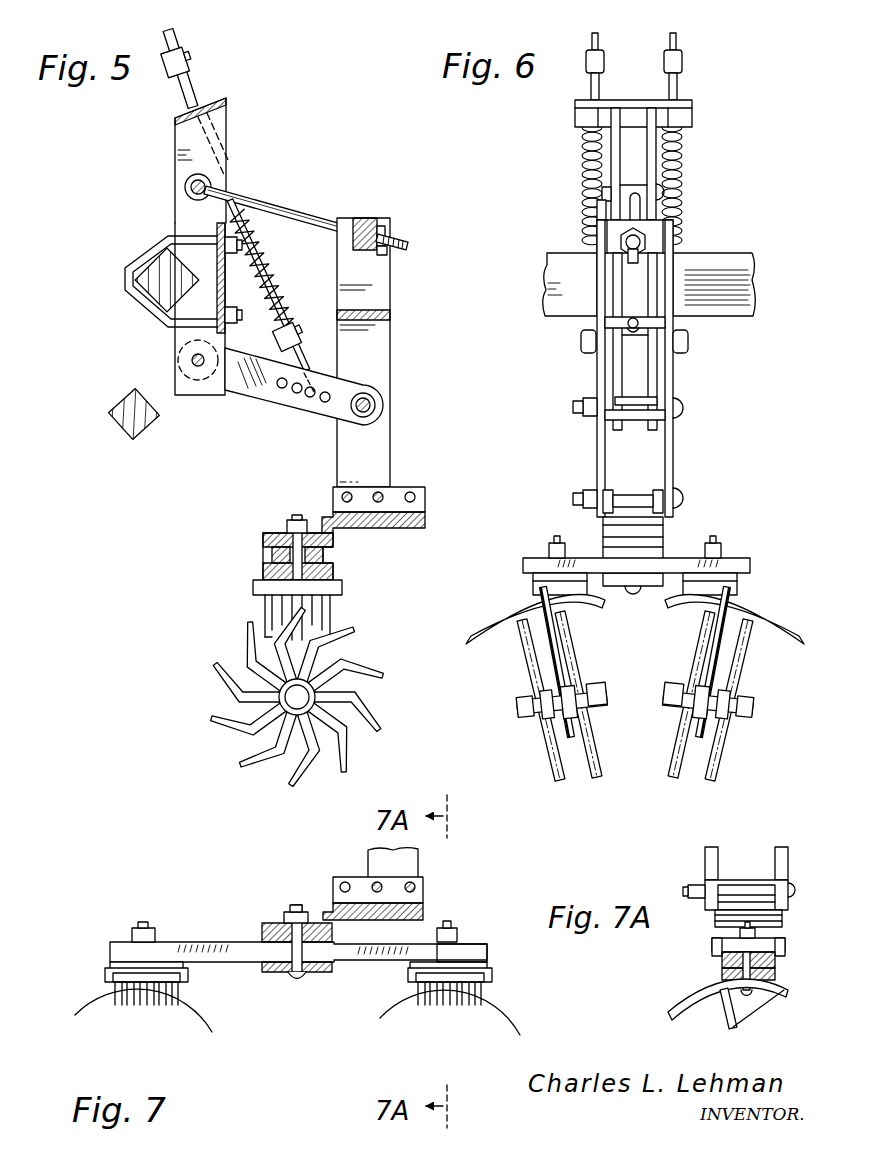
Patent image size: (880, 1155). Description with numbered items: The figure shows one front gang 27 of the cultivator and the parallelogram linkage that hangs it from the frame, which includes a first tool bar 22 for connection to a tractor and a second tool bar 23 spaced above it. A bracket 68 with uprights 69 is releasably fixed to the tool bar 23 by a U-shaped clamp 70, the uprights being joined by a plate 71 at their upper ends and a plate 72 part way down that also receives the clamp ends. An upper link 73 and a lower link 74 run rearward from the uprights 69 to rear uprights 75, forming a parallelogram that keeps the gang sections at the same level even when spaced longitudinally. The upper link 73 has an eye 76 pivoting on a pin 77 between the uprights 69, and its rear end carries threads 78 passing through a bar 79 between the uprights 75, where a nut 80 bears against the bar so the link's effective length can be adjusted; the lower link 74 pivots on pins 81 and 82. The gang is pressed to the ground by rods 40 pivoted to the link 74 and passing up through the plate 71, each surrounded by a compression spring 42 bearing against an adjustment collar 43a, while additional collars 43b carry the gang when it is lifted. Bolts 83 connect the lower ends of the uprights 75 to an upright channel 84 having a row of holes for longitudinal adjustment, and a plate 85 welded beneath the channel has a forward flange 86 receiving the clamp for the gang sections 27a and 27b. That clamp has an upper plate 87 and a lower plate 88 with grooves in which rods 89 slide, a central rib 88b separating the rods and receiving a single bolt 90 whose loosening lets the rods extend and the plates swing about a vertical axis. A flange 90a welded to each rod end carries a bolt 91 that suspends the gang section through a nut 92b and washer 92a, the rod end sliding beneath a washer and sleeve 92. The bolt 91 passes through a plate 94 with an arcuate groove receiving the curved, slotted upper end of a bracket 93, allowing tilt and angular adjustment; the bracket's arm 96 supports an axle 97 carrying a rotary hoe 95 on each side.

In FIG. 5, the first tool bar 22 is at (112, 410).
In FIG. 5, the second tool bar 23 is at (140, 268).
In FIG. 5, the front gang 27 is at (207, 684).
In FIG. 6, the front gang 27 is at (542, 745).
In FIG. 6, the gang section 27a is at (552, 770).
In FIG. 7, the gang section 27a is at (210, 1030).
In FIG. 6, the gang section 27b is at (718, 762).
In FIG. 7, the gang section 27b is at (512, 1022).
In FIG. 5, the rod 40 is at (258, 246).
In FIG. 5, the compression spring 42 is at (270, 272).
In FIG. 6, the adjustment collar 43a is at (581, 340).
In FIG. 5, the additional collar 43b is at (193, 65).
In FIG. 6, the additional collar 43b is at (682, 62).
In FIG. 5, the bracket 68 is at (230, 140).
In FIG. 5, the upright 69 is at (176, 335).
In FIG. 6, the upright 69 is at (647, 145).
In FIG. 5, the U-shaped clamp 70 is at (128, 298).
In FIG. 5, the plate 71 is at (222, 100).
In FIG. 6, the plate 71 is at (692, 115).
In FIG. 5, the plate 72 is at (228, 291).
In FIG. 5, the upper link 73 is at (270, 205).
In FIG. 6, the upper link 73 is at (607, 213).
In FIG. 5, the lower link 74 is at (257, 402).
In FIG. 6, the lower link 74 is at (660, 383).
In FIG. 5, the rear upright 75 is at (392, 436).
In FIG. 6, the rear upright 75 is at (675, 447).
In FIG. 7, the rear upright 75 is at (368, 860).
In FIG. 7A, the rear upright 75 is at (788, 860).
In FIG. 5, the eye 76 is at (190, 180).
In FIG. 5, the pin 77 is at (188, 190).
In FIG. 5, the threads 78 is at (405, 243).
In FIG. 6, the threads 78 is at (634, 255).
In FIG. 5, the bar 79 is at (365, 218).
In FIG. 6, the bar 79 is at (670, 220).
In FIG. 5, the nut 80 is at (385, 255).
In FIG. 6, the nut 80 is at (645, 240).
In FIG. 5, the pin 81 is at (195, 362).
In FIG. 5, the pin 82 is at (376, 403).
In FIG. 6, the pin 82 is at (577, 408).
In FIG. 5, the bolt 83 is at (345, 495).
In FIG. 6, the bolt 83 is at (640, 495).
In FIG. 5, the upright channel 84 is at (428, 497).
In FIG. 7, the upright channel 84 is at (333, 890).
In FIG. 7A, the upright channel 84 is at (739, 895).
In FIG. 5, the plate 85 is at (415, 528).
In FIG. 6, the plate 85 is at (665, 535).
In FIG. 7A, the plate 85 is at (748, 918).
In FIG. 5, the flange 86 is at (265, 535).
In FIG. 5, the upper plate 87 is at (333, 553).
In FIG. 5, the lower plate 88 is at (262, 570).
In FIG. 5, the rib 88b is at (275, 555).
In FIG. 5, the rod 89 is at (333, 570).
In FIG. 6, the rod 89 is at (525, 572).
In FIG. 7, the rod 89 is at (207, 942).
In FIG. 7A, the rod 89 is at (775, 940).
In FIG. 5, the bolt 90 is at (293, 518).
In FIG. 7, the bolt 90 is at (293, 912).
In FIG. 6, the flange 90a is at (738, 585).
In FIG. 7A, the flange 90a is at (778, 975).
In FIG. 6, the bolt 91 is at (556, 538).
In FIG. 7A, the bolt 91 is at (749, 992).
In FIG. 7, the washer or sleeve 92 is at (458, 962).
In FIG. 7A, the washer or sleeve 92 is at (722, 960).
In FIG. 7A, the washer 92a is at (716, 944).
In FIG. 7, the nut 92b is at (450, 928).
In FIG. 7A, the nut 92b is at (755, 930).
In FIG. 6, the bracket 93 is at (800, 645).
In FIG. 7A, the bracket 93 is at (672, 1013).
In FIG. 6, the plate 94 is at (535, 585).
In FIG. 6, the rotary hoe 95 is at (684, 742).
In FIG. 6, the arm 96 is at (716, 662).
In FIG. 6, the axle 97 is at (755, 705).